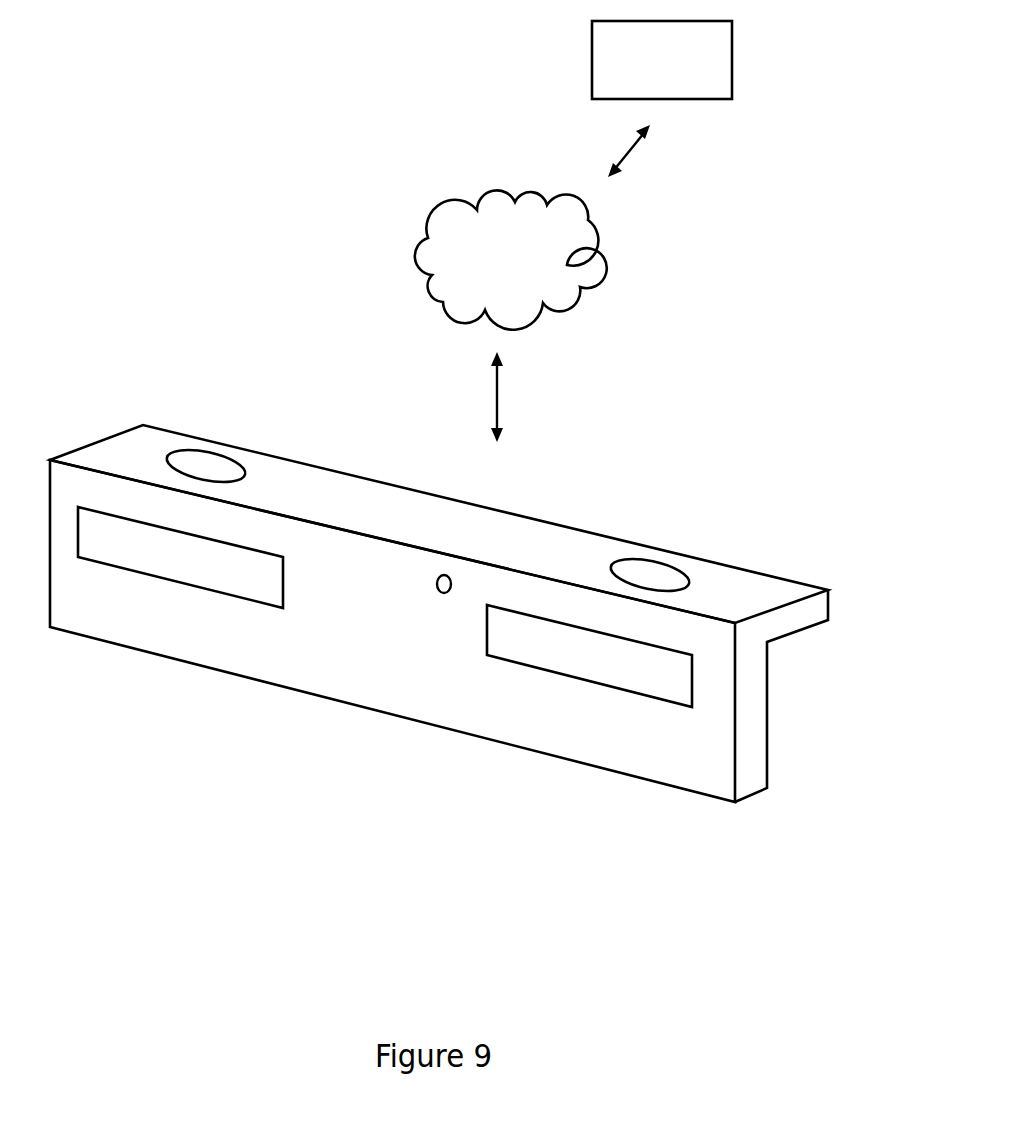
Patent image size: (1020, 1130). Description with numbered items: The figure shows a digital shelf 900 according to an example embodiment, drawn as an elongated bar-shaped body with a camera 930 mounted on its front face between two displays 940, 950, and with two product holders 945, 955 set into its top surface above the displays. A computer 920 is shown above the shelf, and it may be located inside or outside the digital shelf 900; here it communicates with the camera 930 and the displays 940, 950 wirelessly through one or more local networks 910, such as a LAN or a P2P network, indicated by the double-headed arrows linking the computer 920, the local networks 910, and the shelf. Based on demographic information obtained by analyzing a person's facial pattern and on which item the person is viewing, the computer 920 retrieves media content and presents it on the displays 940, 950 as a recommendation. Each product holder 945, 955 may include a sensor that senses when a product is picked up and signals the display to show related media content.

The digital shelf 900 is at (242, 784).
The local network(s) 910 is at (479, 301).
The computer 920 is at (642, 86).
The camera 930 is at (438, 593).
The display 940 is at (172, 560).
The product holder 945 is at (203, 462).
The display 950 is at (600, 667).
The product holder 955 is at (643, 575).